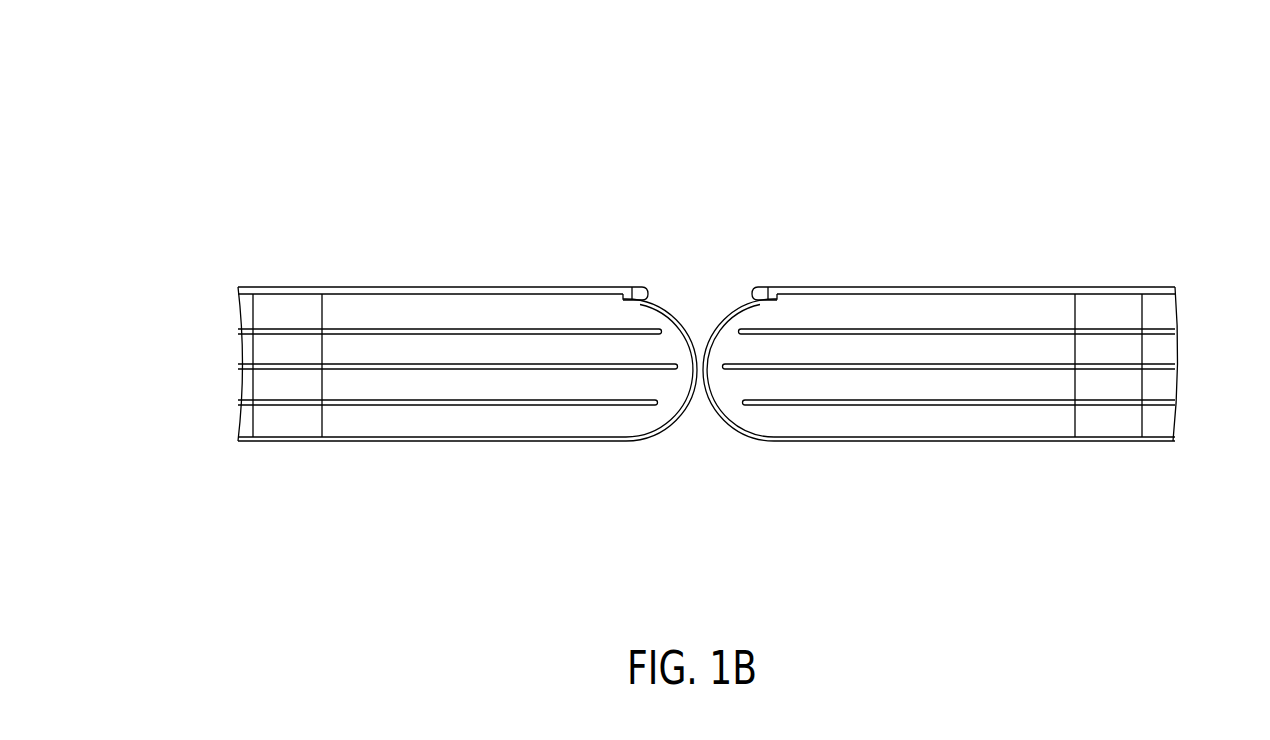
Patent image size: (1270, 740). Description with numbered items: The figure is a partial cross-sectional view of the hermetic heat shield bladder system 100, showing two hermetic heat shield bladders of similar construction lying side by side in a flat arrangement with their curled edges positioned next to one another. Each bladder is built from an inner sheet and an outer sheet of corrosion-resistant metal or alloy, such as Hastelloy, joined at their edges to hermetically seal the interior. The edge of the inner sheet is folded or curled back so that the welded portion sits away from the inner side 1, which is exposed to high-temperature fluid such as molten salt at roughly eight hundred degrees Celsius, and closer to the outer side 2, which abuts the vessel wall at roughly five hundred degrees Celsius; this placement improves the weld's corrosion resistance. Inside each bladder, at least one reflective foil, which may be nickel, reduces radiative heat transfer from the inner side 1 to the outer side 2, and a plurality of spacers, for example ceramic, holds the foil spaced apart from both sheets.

The hermetic heat shield bladder system 100 is at (612, 110).
The outer side 2 is at (704, 200).
The inner side 1 is at (713, 530).